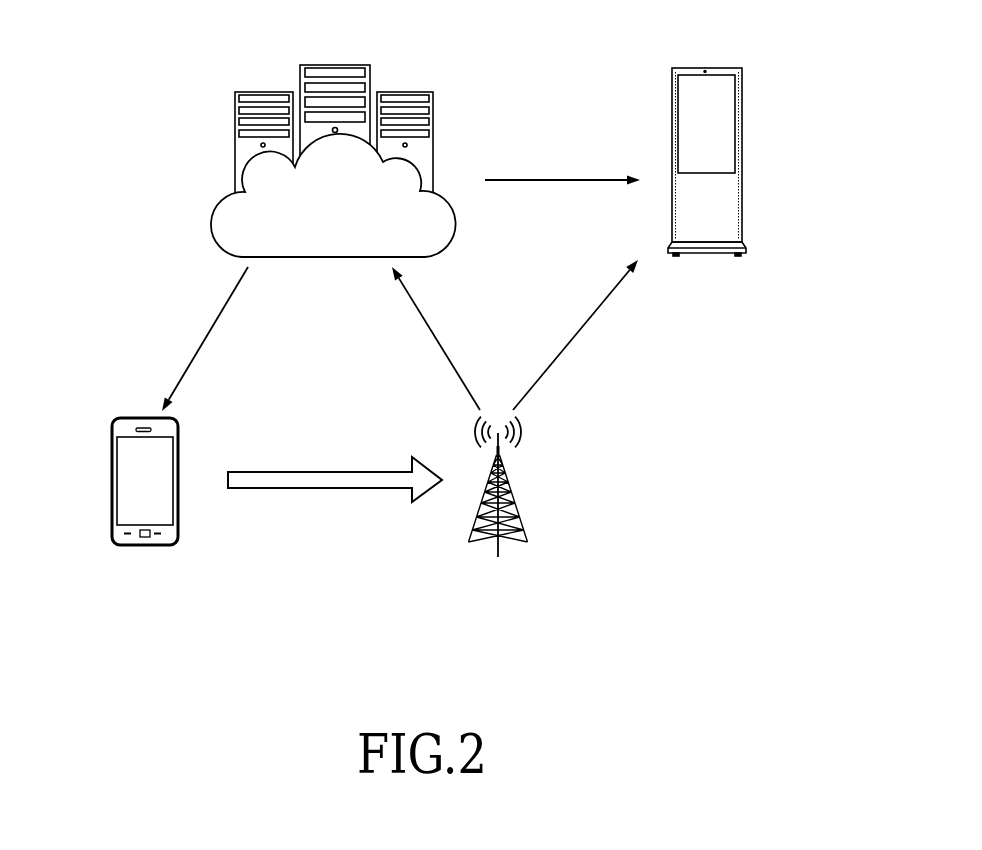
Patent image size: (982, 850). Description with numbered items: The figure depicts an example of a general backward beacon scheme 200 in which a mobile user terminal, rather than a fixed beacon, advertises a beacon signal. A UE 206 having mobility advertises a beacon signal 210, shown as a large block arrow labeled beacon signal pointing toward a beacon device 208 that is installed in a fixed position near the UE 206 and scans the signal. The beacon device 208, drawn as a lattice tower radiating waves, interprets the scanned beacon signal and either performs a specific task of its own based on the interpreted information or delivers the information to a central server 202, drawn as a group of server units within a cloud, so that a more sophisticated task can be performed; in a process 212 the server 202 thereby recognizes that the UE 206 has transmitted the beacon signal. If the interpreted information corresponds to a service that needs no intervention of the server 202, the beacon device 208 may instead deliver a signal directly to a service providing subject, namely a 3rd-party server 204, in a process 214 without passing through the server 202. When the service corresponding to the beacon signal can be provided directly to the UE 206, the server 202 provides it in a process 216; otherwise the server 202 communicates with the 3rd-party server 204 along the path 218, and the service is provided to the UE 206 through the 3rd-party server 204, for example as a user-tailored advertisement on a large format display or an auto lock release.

The beacon-based system 200 is at (190, 54).
The server 202 is at (334, 65).
The 3rd-party server 204 is at (705, 67).
The UE 206 is at (112, 482).
The beacon device 208 is at (508, 487).
The beacon signal 210 is at (327, 470).
The process 212 is at (440, 345).
The process 214 is at (577, 333).
The process 216 is at (203, 341).
The communication from server to 3rd-party server 218 is at (561, 178).